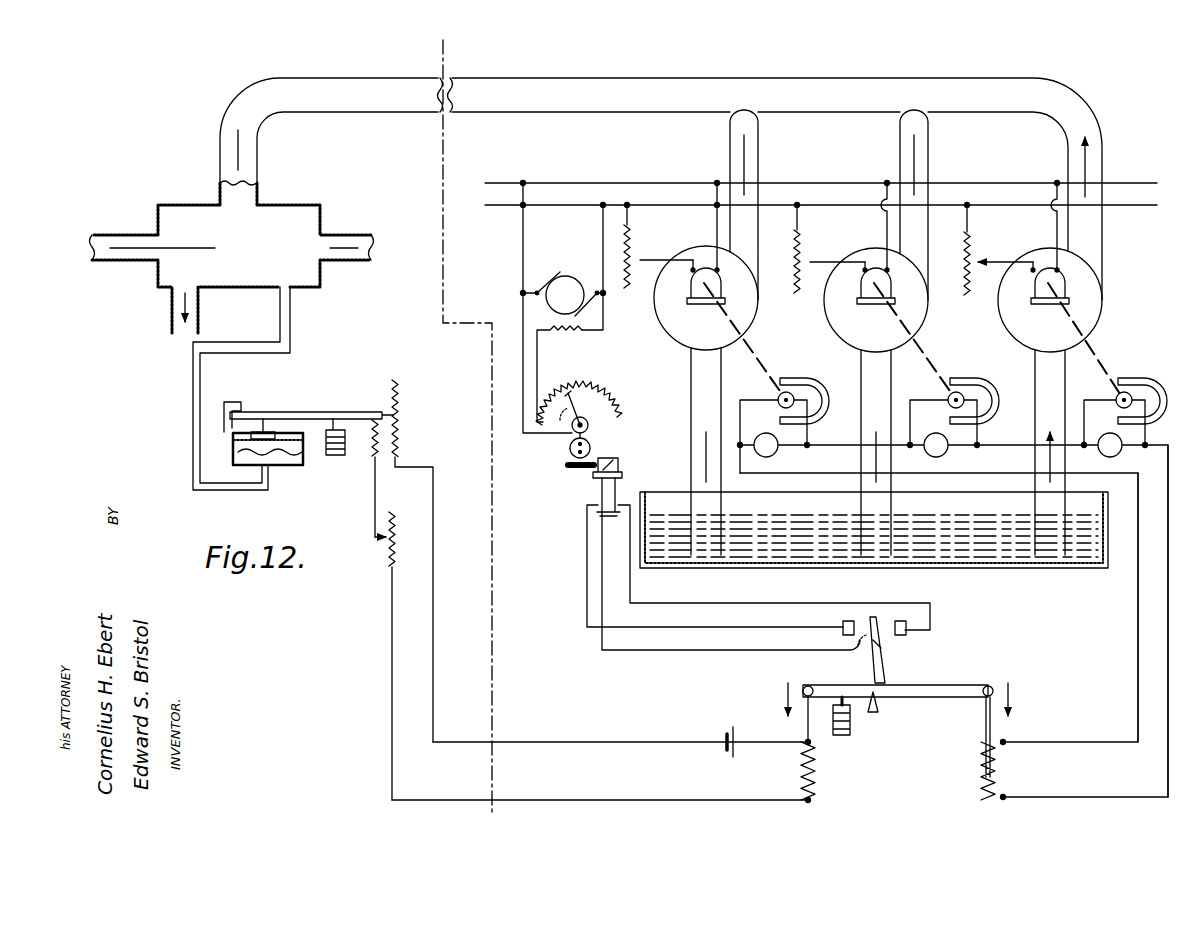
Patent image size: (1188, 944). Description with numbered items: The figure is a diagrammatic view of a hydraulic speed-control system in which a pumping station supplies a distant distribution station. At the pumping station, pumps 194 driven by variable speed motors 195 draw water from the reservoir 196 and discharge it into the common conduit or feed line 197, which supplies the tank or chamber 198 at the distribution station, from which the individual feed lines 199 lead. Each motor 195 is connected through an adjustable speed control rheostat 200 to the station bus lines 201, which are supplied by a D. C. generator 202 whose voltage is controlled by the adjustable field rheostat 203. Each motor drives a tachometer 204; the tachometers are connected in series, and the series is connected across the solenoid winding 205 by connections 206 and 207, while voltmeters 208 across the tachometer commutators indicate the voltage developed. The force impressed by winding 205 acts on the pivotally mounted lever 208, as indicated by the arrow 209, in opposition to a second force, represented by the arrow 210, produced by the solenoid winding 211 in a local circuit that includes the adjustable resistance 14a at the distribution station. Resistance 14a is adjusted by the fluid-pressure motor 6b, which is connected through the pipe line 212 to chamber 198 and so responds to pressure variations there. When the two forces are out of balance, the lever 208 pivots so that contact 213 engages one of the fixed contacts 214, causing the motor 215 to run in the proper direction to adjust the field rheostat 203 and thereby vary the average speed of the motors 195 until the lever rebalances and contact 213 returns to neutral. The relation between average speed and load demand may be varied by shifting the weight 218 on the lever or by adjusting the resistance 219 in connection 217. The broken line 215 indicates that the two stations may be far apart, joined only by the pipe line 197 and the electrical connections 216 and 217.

The common conduit or feed line 197 is at (343, 106).
The tank or chamber 198 is at (187, 193).
The individual feed lines 199 is at (128, 235).
The motor 215 is at (441, 300).
The pipe line 212 is at (193, 419).
The fluid-pressure motor 6b is at (233, 456).
The adjustable resistance 14a is at (399, 401).
The adjustable resistance 219 is at (390, 560).
The station bus lines 201 is at (654, 204).
The D. C. generator 202 is at (582, 276).
The adjustable speed control rheostat 200 is at (634, 240).
The pump 194 is at (664, 333).
The variable speed motor 195 is at (722, 292).
The tachometer 204 is at (806, 376).
The voltmeter / pivotally mounted lever 208 is at (777, 455).
The adjustable field rheostat 203 is at (622, 400).
The reservoir 196 is at (1106, 570).
The contact 213 is at (882, 616).
The fixed contacts 214 is at (843, 626).
The arrow 210 is at (784, 707).
The arrow 209 is at (1012, 706).
The electrical connection 216 is at (662, 744).
The electrical connection 217 is at (660, 801).
The solenoid winding 211 is at (797, 763).
The weight 218 is at (850, 737).
The solenoid winding 205 is at (1006, 771).
The connection 206 is at (1138, 616).
The connection 207 is at (1167, 641).